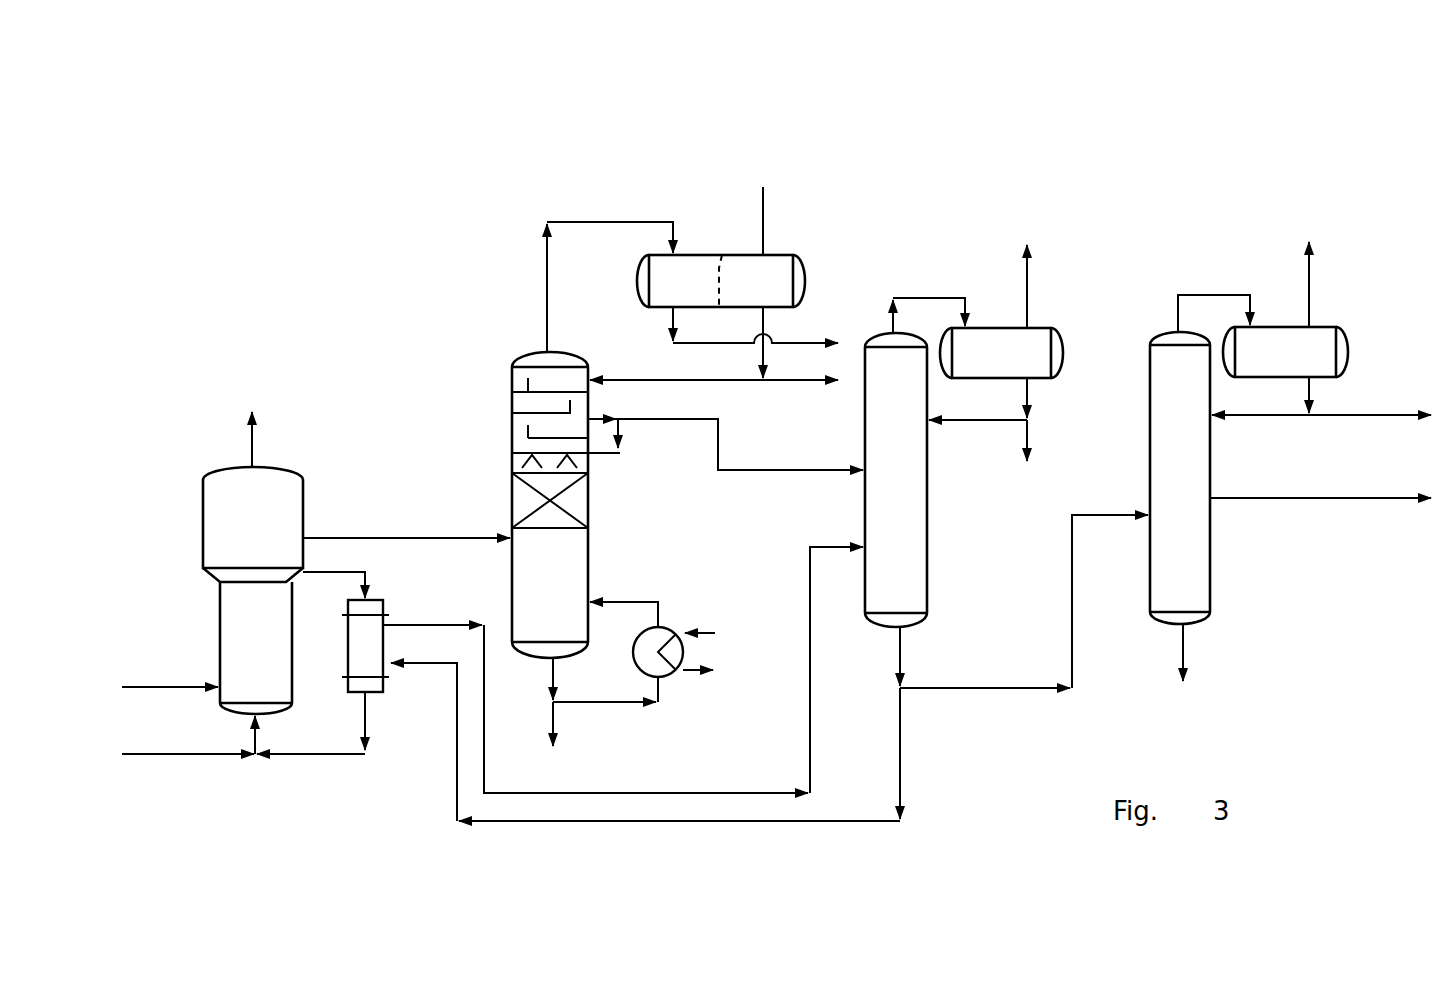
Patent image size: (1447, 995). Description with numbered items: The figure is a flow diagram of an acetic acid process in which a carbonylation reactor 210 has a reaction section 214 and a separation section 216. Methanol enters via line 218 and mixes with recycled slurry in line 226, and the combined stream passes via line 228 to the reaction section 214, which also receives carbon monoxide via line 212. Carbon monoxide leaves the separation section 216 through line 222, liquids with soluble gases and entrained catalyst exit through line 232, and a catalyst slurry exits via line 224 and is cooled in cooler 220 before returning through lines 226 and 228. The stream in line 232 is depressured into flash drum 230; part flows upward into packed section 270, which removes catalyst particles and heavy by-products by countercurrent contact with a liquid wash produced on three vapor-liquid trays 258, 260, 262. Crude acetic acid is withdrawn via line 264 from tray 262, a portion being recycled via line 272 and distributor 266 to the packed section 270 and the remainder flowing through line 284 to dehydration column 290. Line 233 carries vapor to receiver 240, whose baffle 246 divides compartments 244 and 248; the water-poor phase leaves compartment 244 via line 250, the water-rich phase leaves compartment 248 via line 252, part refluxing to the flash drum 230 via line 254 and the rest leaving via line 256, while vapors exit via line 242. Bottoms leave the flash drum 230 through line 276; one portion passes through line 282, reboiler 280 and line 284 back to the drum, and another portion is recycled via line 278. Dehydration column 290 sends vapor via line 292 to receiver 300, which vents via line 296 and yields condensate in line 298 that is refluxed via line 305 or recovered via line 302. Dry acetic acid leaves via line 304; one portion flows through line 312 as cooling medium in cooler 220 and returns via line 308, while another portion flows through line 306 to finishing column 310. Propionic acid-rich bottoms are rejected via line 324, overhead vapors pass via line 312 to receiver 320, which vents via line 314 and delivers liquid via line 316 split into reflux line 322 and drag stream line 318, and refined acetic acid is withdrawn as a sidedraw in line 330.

The carbonylation 3PTR 210 is at (204, 590).
The line 212 is at (178, 686).
The reaction section 214 is at (276, 651).
The separation section 216 is at (276, 546).
The line 218 is at (186, 753).
The cooler 220 is at (348, 651).
The line 222 is at (253, 441).
The line 224 is at (366, 591).
The line 226 is at (325, 755).
The line 228 is at (258, 742).
The flash drum 230 is at (508, 349).
The line 232 is at (325, 538).
The line 233 is at (545, 278).
The receiver 240 is at (749, 261).
The line 242 is at (765, 215).
The compartment 244 is at (664, 295).
The baffle 246 is at (731, 254).
The compartment 248 is at (730, 295).
The line 250 is at (672, 330).
The line 252 is at (765, 318).
The line 254 is at (607, 380).
The line 256 is at (775, 382).
The vapor-liquid tray 258 is at (512, 392).
The vapor-liquid tray 260 is at (512, 413).
The vapor-liquid tray 262 is at (512, 438).
The line 264 is at (600, 418).
The distributor 266 is at (519, 458).
The packed section 270 is at (577, 507).
The line 272 is at (616, 453).
The line 276 is at (553, 681).
The line 278 is at (553, 733).
The reboiler 280 is at (675, 680).
The line 282 is at (627, 703).
The line 284 is at (618, 602).
The dehydration column 290 is at (872, 489).
The line 292 is at (918, 298).
The line 296 is at (1029, 263).
The line 298 is at (1029, 398).
The receiver 300 is at (978, 368).
The line 302 is at (1029, 440).
The line 304 is at (902, 656).
The line 305 is at (970, 421).
The line 306 is at (967, 690).
The line 308 is at (650, 793).
The finishing column 310 is at (1157, 478).
The line 312 is at (653, 823).
The line 314 is at (1311, 283).
The line 316 is at (1311, 391).
The line 318 is at (1350, 417).
The receiver 320 is at (1262, 369).
The line 322 is at (1250, 417).
The line 324 is at (1185, 656).
The line 330 is at (1298, 500).